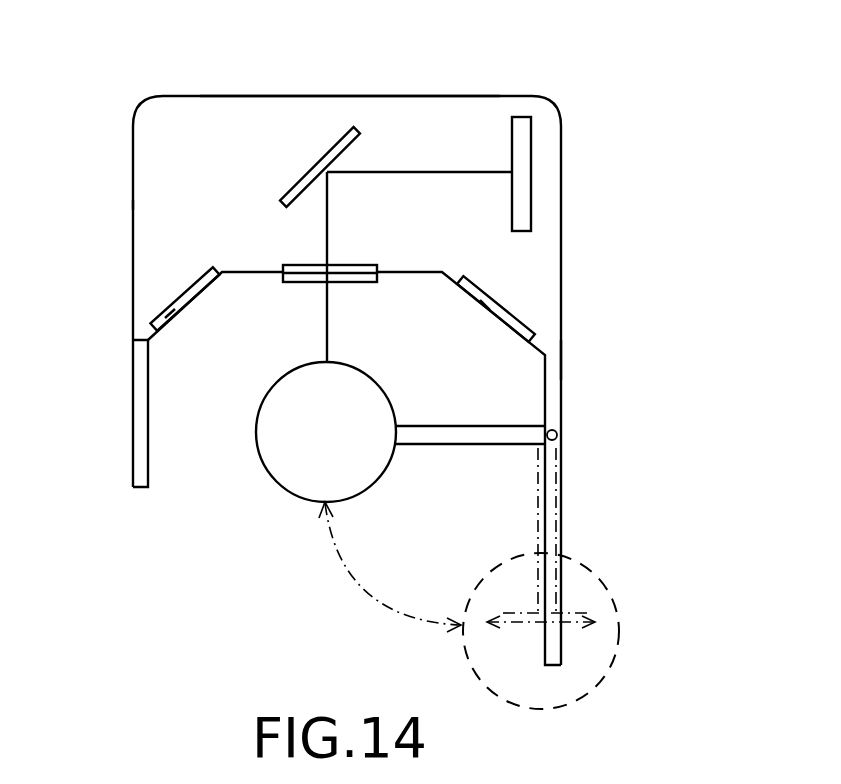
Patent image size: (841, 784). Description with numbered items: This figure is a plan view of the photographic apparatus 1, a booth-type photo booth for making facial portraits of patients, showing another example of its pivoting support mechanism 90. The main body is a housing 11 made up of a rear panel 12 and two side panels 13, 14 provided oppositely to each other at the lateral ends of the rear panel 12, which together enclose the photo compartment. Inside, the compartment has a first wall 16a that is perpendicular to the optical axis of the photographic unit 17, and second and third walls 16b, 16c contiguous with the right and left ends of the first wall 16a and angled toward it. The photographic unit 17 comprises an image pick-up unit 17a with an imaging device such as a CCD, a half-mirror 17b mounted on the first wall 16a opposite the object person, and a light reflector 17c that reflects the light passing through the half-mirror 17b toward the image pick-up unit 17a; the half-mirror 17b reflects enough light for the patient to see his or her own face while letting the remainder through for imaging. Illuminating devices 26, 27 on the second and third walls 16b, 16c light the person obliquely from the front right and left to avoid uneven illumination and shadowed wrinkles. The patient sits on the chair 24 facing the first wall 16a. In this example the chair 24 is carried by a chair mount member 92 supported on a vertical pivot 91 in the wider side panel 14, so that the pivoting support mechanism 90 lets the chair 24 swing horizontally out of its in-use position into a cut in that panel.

The photographic apparatus 1 is at (582, 81).
The housing 11 is at (293, 107).
The rear panel 12 is at (432, 110).
The side panel 13 is at (140, 373).
The side panel 14 is at (562, 353).
The first wall 16a is at (415, 277).
The second wall 16b is at (510, 330).
The third wall 16c is at (207, 306).
The photographic unit 17 is at (540, 205).
The image pick-up unit 17a is at (523, 171).
The half-mirror 17b is at (338, 283).
The light reflector 17c is at (307, 178).
The chair 24 is at (290, 463).
The illuminating device 26 is at (487, 305).
The illuminating device 27 is at (178, 312).
The pivoting support mechanism 90 is at (592, 467).
The pivot 91 is at (559, 433).
The chair mount member 92 is at (463, 447).